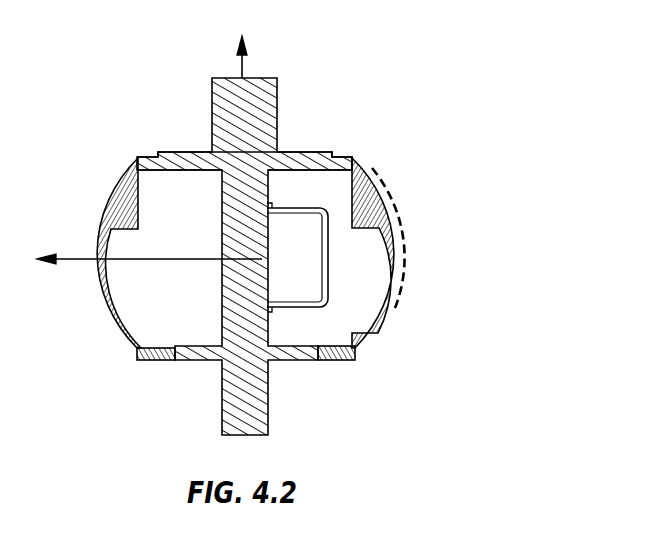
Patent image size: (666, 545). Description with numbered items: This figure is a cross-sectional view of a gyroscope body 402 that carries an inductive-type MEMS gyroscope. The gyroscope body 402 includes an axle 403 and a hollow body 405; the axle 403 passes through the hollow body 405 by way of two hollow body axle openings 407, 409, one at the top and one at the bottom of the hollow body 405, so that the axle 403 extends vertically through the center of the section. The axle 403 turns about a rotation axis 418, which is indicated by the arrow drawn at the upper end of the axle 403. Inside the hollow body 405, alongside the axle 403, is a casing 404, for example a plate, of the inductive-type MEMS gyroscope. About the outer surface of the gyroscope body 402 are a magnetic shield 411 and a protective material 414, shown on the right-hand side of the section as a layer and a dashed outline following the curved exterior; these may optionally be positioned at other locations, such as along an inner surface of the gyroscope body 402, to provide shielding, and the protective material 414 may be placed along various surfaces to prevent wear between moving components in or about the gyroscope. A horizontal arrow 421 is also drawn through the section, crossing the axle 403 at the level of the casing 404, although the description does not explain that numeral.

The gyroscope body 402 is at (241, 235).
The axle 403 is at (268, 392).
The casing 404 is at (310, 271).
The hollow body 405 is at (122, 338).
The hollow body axle opening 407 is at (140, 160).
The hollow body axle opening 409 is at (173, 358).
The magnetic shield 411 is at (393, 312).
The protective material 414 is at (400, 283).
The rotation axis 418 is at (243, 70).
The rotation axis 421 is at (69, 262).